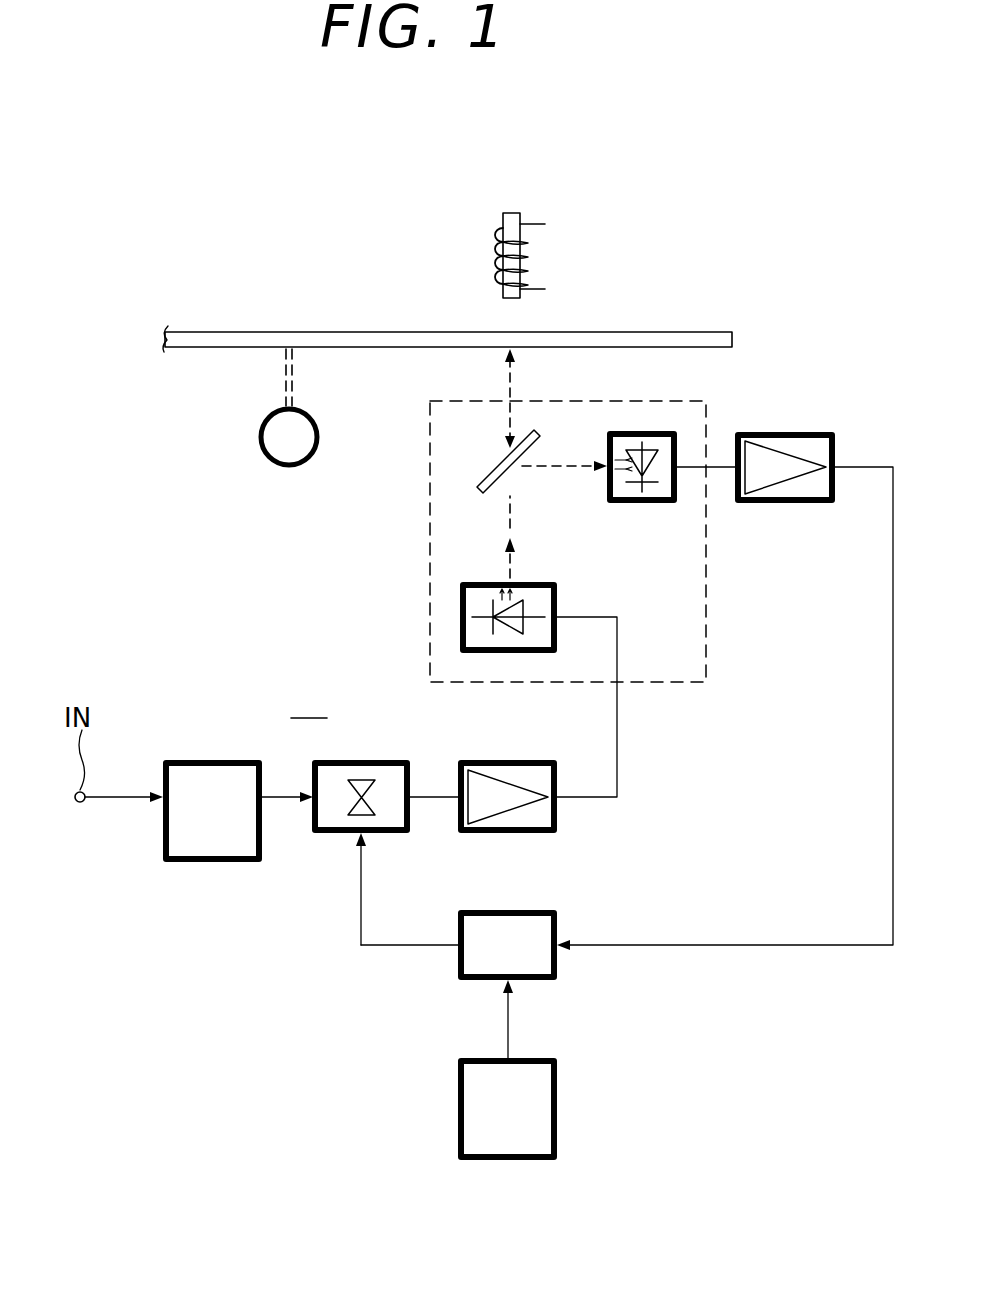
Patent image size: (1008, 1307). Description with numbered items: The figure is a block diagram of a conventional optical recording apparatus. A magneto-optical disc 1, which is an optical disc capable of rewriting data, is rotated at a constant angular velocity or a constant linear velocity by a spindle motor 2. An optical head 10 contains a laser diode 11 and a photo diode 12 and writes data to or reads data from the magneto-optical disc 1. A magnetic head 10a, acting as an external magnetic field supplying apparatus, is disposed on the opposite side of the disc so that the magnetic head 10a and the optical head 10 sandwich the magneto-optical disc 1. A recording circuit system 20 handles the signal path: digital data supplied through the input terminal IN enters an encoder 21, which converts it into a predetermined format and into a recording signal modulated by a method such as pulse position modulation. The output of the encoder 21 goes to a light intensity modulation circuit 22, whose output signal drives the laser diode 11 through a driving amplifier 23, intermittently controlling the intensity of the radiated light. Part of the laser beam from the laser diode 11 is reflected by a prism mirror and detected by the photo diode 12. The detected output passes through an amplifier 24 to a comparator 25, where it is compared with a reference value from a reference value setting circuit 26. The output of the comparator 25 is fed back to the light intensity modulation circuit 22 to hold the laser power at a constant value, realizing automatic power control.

The magneto-optical disc 1 is at (222, 348).
The spindle motor 2 is at (262, 447).
The optical head 10 is at (706, 630).
The magnetic head 10a is at (495, 248).
The laser diode 11 is at (541, 582).
The photo diode 12 is at (641, 503).
The recording circuit system 20 is at (308, 704).
The encoder 21 is at (205, 862).
The light intensity modulation circuit 22 is at (335, 833).
The driving amplifier 23 is at (525, 833).
The amplifier 24 is at (785, 503).
The comparator 25 is at (537, 980).
The reference value setting circuit 26 is at (557, 1103).